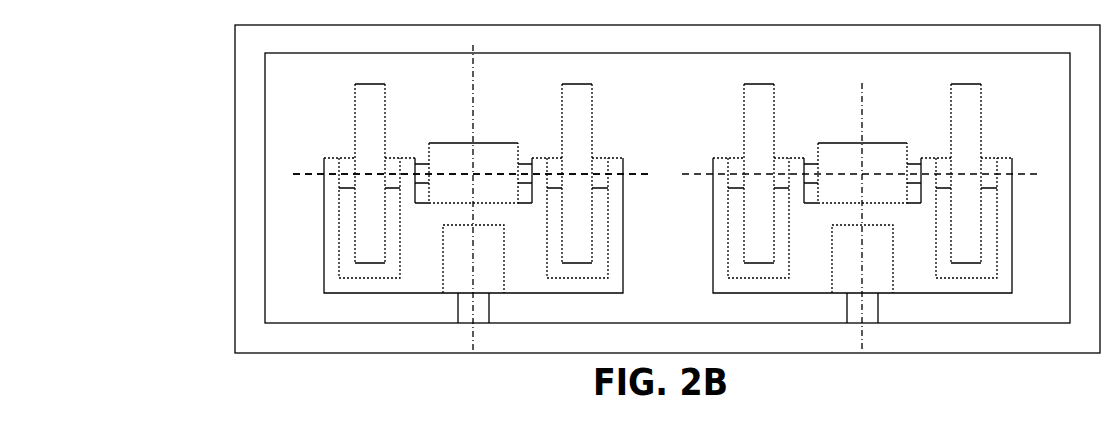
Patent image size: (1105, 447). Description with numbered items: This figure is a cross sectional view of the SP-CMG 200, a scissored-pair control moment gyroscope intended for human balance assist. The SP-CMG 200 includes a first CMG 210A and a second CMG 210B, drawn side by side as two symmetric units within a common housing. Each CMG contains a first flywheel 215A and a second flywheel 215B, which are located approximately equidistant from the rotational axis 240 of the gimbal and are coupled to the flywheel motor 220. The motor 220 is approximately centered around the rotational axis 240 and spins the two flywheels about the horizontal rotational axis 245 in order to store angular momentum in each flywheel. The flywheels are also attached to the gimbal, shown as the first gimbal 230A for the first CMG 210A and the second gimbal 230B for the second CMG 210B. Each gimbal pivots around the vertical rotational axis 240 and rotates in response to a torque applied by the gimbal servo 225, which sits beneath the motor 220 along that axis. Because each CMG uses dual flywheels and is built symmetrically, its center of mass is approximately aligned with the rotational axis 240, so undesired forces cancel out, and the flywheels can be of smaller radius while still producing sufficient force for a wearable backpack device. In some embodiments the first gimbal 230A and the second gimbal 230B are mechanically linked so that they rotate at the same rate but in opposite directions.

The SP-CMG 200 is at (190, 42).
The first CMG 210A is at (322, 97).
The second CMG 210B is at (710, 97).
The first flywheel 215A is at (362, 138).
The second flywheel 215B is at (585, 137).
The flywheel motor 220 is at (482, 142).
The gimbal servo 225 is at (493, 290).
The first gimbal 230A is at (593, 285).
The second gimbal 230B is at (973, 287).
The rotational axis 240 is at (468, 64).
The rotational axis 245 is at (275, 174).